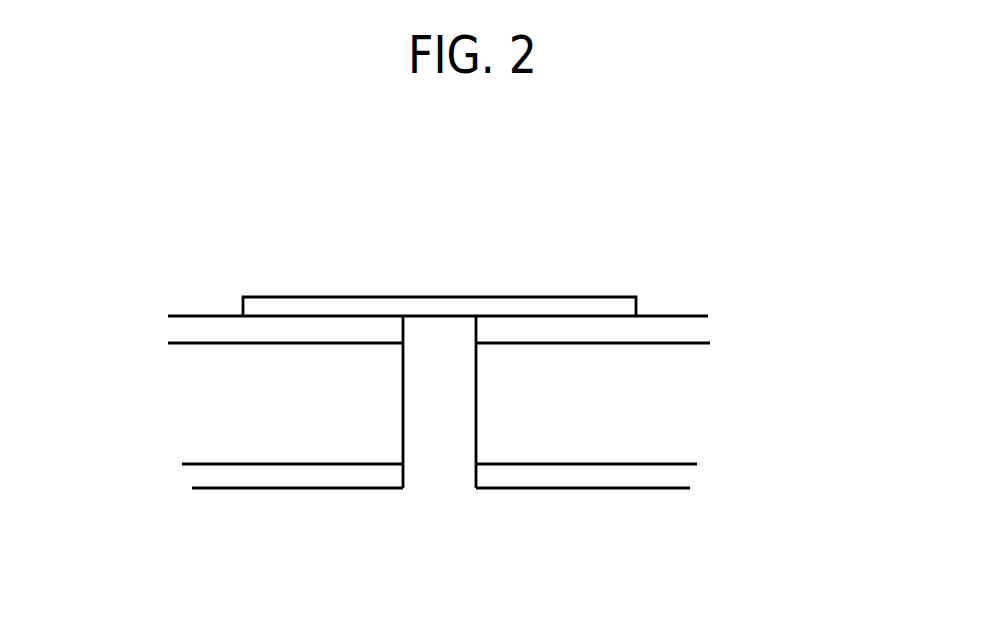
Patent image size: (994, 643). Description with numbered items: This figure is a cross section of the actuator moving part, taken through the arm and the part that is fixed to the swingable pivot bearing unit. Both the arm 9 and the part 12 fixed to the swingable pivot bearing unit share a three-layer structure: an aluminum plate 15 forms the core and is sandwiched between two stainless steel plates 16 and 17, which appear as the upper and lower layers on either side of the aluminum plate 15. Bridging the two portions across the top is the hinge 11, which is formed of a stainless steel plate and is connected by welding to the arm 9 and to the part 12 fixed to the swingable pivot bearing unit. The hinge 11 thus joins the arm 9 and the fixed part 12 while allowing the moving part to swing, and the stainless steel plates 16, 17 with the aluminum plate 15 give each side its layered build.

The hinge 11 is at (442, 304).
The stainless steel plate 17 is at (188, 332).
The aluminum plate 15 is at (238, 404).
The stainless steel plate 16 is at (212, 473).
The part fixed to the swingable pivot bearing unit 12 is at (417, 530).
The arm 9 is at (757, 547).